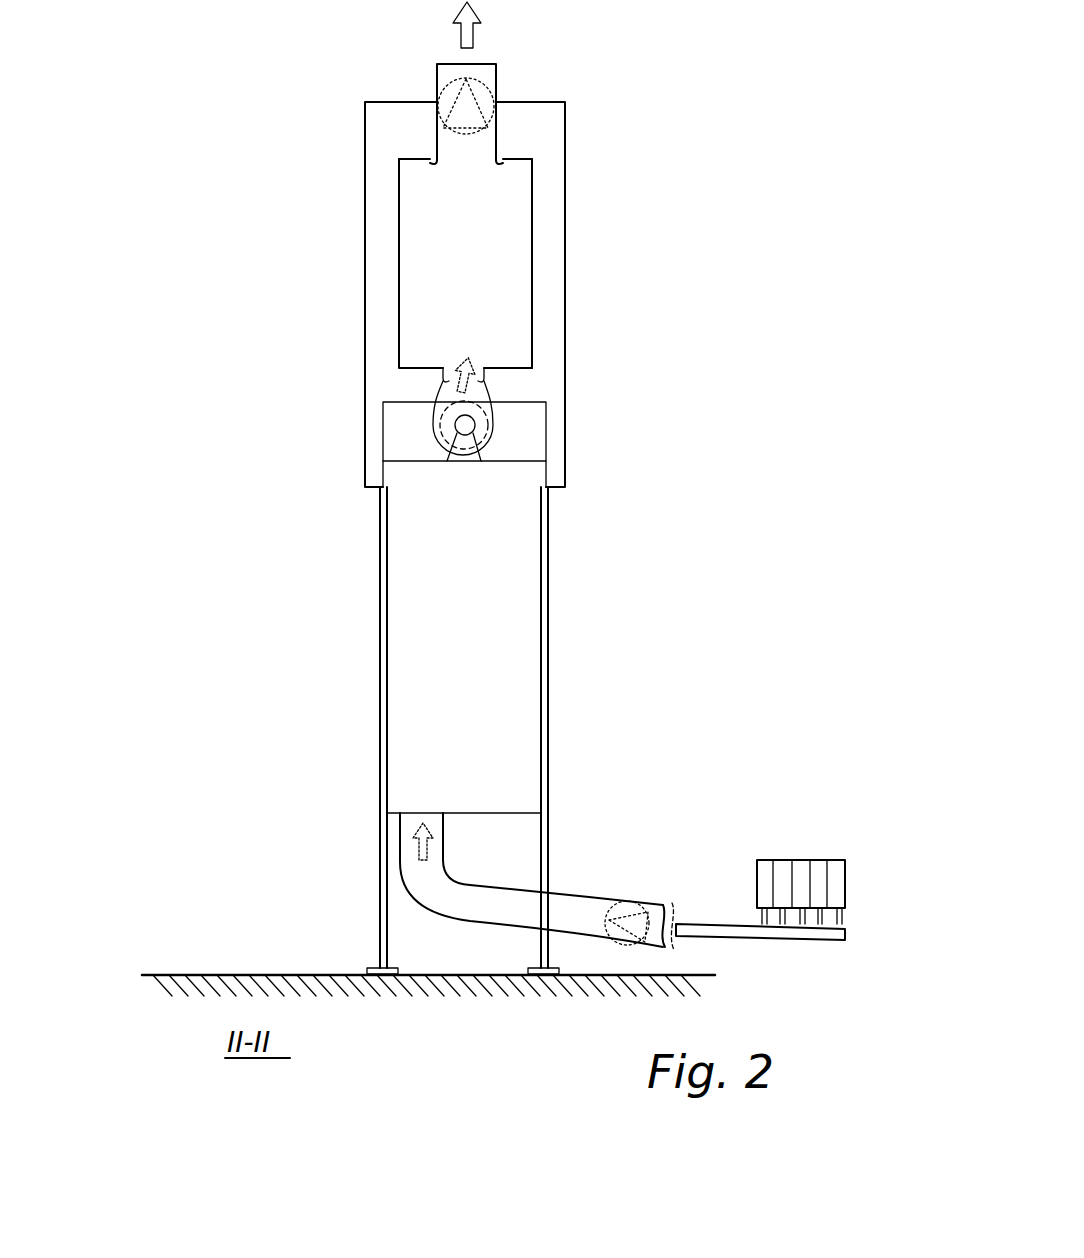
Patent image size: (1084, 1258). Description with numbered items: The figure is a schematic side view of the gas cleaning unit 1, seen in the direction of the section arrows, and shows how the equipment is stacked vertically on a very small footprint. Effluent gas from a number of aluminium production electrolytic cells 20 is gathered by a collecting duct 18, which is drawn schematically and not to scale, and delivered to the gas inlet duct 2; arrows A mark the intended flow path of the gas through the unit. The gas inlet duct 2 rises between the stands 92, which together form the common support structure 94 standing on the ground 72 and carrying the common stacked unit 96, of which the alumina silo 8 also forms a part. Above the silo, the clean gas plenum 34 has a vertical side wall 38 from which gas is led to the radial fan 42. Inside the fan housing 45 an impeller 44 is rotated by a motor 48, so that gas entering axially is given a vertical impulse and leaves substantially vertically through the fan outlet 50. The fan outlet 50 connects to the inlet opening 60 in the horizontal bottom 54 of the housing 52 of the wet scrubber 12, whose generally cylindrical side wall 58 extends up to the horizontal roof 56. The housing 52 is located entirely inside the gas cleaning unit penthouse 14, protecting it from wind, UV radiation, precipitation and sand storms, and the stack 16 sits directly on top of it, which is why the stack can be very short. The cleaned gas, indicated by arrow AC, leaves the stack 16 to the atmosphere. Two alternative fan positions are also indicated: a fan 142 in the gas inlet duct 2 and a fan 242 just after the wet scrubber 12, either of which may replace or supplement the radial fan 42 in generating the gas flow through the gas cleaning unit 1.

The gas cleaning unit 1 is at (712, 100).
The gas inlet duct 2 is at (537, 885).
The alumina silo 8 is at (520, 558).
The wet scrubber 12 is at (469, 242).
The gas cleaning unit penthouse 14 is at (365, 161).
The stack 16 is at (496, 80).
The collecting duct 18 is at (712, 925).
The aluminium production electrolytic cells 20 is at (843, 862).
The clean gas plenum 34 is at (518, 444).
The vertical side wall 38 is at (535, 439).
The radial fan 42 is at (420, 427).
The impeller 44 is at (443, 393).
The housing 45 is at (435, 408).
The motor 48 is at (475, 425).
The fan outlet 50 is at (386, 364).
The housing 52 is at (548, 251).
The horizontal bottom 54 is at (530, 379).
The horizontal roof 56 is at (513, 164).
The cylindrical side wall 58 is at (399, 243).
The inlet opening 60 is at (458, 366).
The ground 72 is at (273, 974).
The stands 92 is at (449, 730).
The common support structure 94 is at (365, 820).
The common stacked unit 96 is at (335, 730).
The fan 142 is at (628, 906).
The fan 242 is at (443, 84).
The arrows A is at (470, 375).
The arrow AC is at (474, 32).